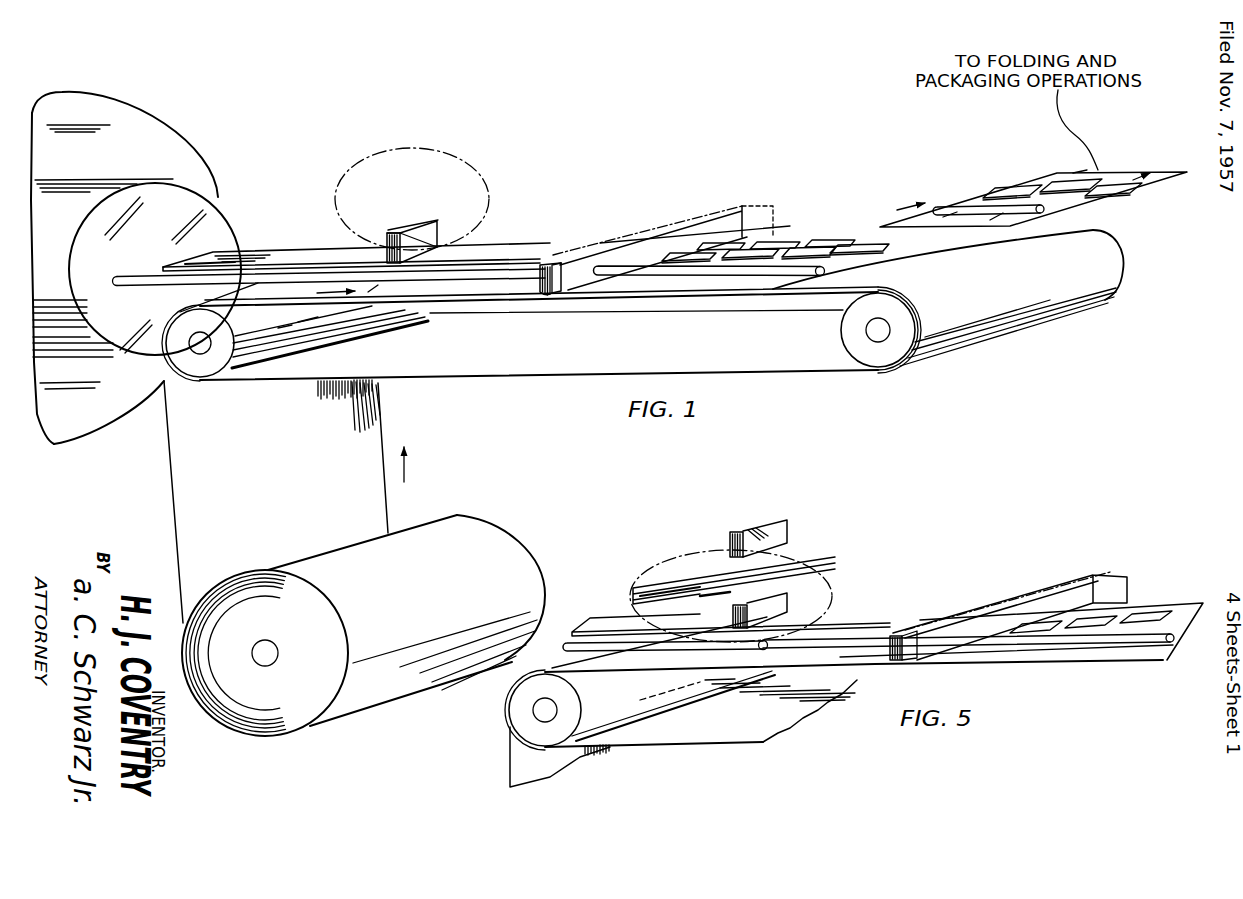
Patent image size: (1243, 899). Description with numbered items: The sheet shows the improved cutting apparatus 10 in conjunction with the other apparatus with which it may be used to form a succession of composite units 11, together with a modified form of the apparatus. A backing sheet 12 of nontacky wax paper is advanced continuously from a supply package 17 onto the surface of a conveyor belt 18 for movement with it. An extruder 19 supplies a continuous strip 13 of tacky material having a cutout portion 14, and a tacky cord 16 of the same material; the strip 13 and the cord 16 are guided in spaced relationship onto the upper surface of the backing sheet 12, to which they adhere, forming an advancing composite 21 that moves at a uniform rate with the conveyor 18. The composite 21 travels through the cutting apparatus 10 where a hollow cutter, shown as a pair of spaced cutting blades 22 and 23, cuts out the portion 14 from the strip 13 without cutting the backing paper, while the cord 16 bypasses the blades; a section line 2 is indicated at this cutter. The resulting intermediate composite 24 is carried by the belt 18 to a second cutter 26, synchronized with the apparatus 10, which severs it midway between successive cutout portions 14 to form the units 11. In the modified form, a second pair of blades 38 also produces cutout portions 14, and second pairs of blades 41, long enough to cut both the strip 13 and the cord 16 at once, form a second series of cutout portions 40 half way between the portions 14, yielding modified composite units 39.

In FIG. 1, the section line 2- 2 is at (335, 169).
In FIG. 5, the section line 2- 2 is at (731, 596).
In FIG. 1, the cutting apparatus 10 is at (399, 161).
In FIG. 1, the composite unit 11 is at (793, 237).
In FIG. 1, the backing sheet 12 is at (170, 459).
In FIG. 5, the backing sheet 12 is at (513, 748).
In FIG. 1, the strip 13 is at (263, 255).
In FIG. 5, the strip 13 is at (620, 620).
In FIG. 1, the cutout portion 14 is at (543, 262).
In FIG. 5, the cutout portion 14 is at (882, 617).
In FIG. 1, the tacky cord 16 is at (145, 288).
In FIG. 5, the tacky cord 16 is at (630, 648).
In FIG. 1, the supply package 17 is at (307, 718).
In FIG. 1, the conveyor belt 18 is at (442, 371).
In FIG. 5, the conveyor belt 18 is at (687, 738).
In FIG. 1, the extruder 19 is at (172, 130).
In FIG. 1, the advancing composite 21 is at (297, 235).
In FIG. 5, the advancing composite 21 is at (598, 612).
In FIG. 1, the cutting blade 22 is at (420, 232).
In FIG. 5, the cutting blade 22 is at (785, 604).
In FIG. 1, the cutting blade 23 is at (387, 242).
In FIG. 5, the cutting blade 23 is at (733, 613).
In FIG. 1, the intermediate composite 24 is at (513, 233).
In FIG. 5, the intermediate composite 24 is at (838, 602).
In FIG. 1, the second cutter 26 is at (778, 219).
In FIG. 5, the second cutter 26 is at (1130, 582).
In FIG. 5, the second pair of cutting blades 38 is at (733, 548).
In FIG. 5, the composite unit 39 is at (965, 658).
In FIG. 5, the cutout portion 40 is at (767, 650).
In FIG. 5, the second pairs of blades 41 is at (648, 602).